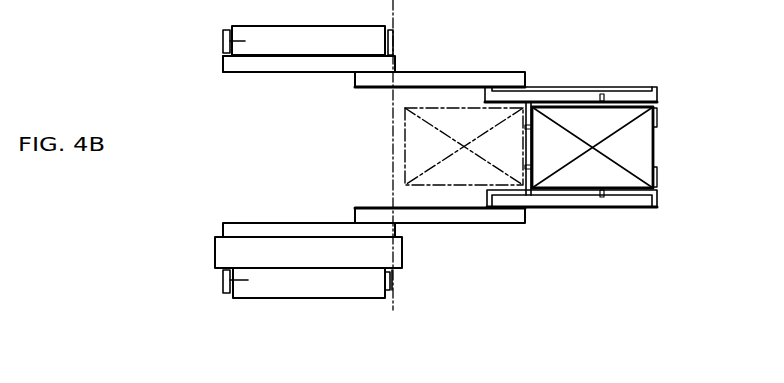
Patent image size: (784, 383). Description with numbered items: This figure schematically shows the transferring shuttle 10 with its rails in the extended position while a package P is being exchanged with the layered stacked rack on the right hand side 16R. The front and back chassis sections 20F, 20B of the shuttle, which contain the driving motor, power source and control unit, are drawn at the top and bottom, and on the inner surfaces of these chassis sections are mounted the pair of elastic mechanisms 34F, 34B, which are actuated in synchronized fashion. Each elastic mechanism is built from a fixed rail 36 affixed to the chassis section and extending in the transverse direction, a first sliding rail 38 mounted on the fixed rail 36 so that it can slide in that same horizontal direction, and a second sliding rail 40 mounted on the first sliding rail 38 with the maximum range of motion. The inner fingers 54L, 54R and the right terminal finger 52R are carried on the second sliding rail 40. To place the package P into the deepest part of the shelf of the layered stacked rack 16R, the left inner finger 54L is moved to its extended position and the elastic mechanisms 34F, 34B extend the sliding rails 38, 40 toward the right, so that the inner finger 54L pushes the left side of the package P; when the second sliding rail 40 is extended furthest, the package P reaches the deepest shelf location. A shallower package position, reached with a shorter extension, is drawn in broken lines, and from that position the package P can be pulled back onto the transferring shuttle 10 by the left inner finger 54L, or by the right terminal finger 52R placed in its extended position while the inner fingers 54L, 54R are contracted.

The transferring shuttle 10 is at (432, 53).
The right layered stacked rack 16R is at (395, 308).
The front chassis section 20F is at (232, 42).
The back chassis section 20B is at (240, 281).
The front elastic mechanism 34F is at (215, 68).
The back elastic mechanism 34B is at (218, 230).
The fixed rail 36 is at (250, 62).
The first sliding rail 38 is at (377, 83).
The second sliding rail 40 is at (640, 93).
The right terminal finger 52R is at (658, 113).
The left inner finger 54L is at (530, 102).
The right inner finger 54R is at (602, 98).
The package P is at (653, 147).